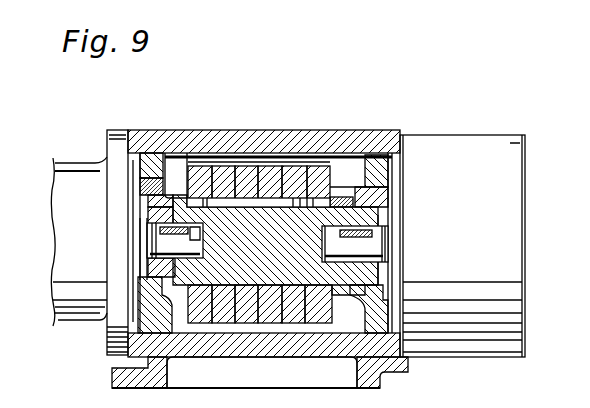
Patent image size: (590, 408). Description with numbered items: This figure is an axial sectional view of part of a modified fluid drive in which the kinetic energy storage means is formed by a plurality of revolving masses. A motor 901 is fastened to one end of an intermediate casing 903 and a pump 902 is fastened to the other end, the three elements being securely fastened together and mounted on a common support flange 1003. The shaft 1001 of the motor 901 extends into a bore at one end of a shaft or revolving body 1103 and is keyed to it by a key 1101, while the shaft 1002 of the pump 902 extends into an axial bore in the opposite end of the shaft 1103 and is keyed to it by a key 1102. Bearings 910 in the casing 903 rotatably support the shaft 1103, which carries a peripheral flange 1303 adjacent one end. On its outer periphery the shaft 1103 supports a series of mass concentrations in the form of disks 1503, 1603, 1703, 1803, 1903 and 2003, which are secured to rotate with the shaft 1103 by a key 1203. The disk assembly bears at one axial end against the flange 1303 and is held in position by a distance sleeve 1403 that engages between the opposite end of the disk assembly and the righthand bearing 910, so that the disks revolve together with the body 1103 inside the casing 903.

The motor 901 is at (507, 172).
The pump 902 is at (68, 210).
The intermediate casing 903 is at (140, 140).
The bearing 910 is at (140, 192).
The shaft of motor 1001 is at (388, 255).
The shaft of pump 1002 is at (140, 267).
The common support flange 1003 is at (128, 378).
The key 1101 is at (375, 235).
The key 1102 is at (150, 230).
The shaft or revolving body 1103 is at (238, 266).
The key 1203 is at (260, 205).
The peripheral flange 1303 is at (180, 290).
The distance sleeve 1403 is at (347, 190).
The disk 1503 is at (197, 170).
The disk 1603 is at (222, 313).
The disk 1703 is at (248, 180).
The disk 1803 is at (272, 180).
The disk 1903 is at (297, 313).
The disk 2003 is at (317, 180).